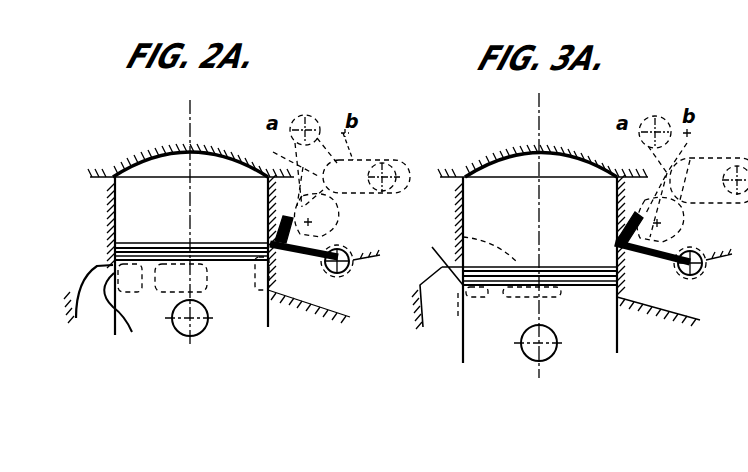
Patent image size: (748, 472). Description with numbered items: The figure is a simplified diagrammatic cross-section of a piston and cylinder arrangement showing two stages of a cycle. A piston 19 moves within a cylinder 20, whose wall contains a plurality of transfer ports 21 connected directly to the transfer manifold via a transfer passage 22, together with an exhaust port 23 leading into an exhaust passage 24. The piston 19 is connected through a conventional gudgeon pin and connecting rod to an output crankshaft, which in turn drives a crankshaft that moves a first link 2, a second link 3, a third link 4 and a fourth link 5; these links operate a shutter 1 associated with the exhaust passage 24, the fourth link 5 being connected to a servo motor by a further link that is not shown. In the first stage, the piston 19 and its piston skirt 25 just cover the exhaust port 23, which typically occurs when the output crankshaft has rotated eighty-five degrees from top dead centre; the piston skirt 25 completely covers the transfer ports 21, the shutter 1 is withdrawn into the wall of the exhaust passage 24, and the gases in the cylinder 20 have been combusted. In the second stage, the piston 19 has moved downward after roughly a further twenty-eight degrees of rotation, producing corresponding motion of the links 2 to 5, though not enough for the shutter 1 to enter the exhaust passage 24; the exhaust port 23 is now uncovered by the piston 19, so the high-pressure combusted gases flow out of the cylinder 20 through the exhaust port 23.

In FIG. 2A, the shutter 1 is at (285, 250).
In FIG. 3A, the shutter 1 is at (630, 250).
In FIG. 2A, the first link 2 is at (333, 228).
In FIG. 2A, the second link 3 is at (287, 172).
In FIG. 2A, the third link 4 is at (388, 158).
In FIG. 2A, the fourth link 5 is at (305, 115).
In FIG. 2A, the piston 19 is at (150, 242).
In FIG. 2A, the cylinder 20 is at (140, 170).
In FIG. 2A, the transfer ports 21 is at (167, 266).
In FIG. 3A, the transfer ports 21 is at (463, 237).
In FIG. 2A, the transfer passage 22 is at (98, 276).
In FIG. 2A, the exhaust port 23 is at (283, 297).
In FIG. 2A, the exhaust passage 24 is at (323, 290).
In FIG. 3A, the exhaust passage 24 is at (667, 300).
In FIG. 3A, the piston skirt 25 is at (477, 340).